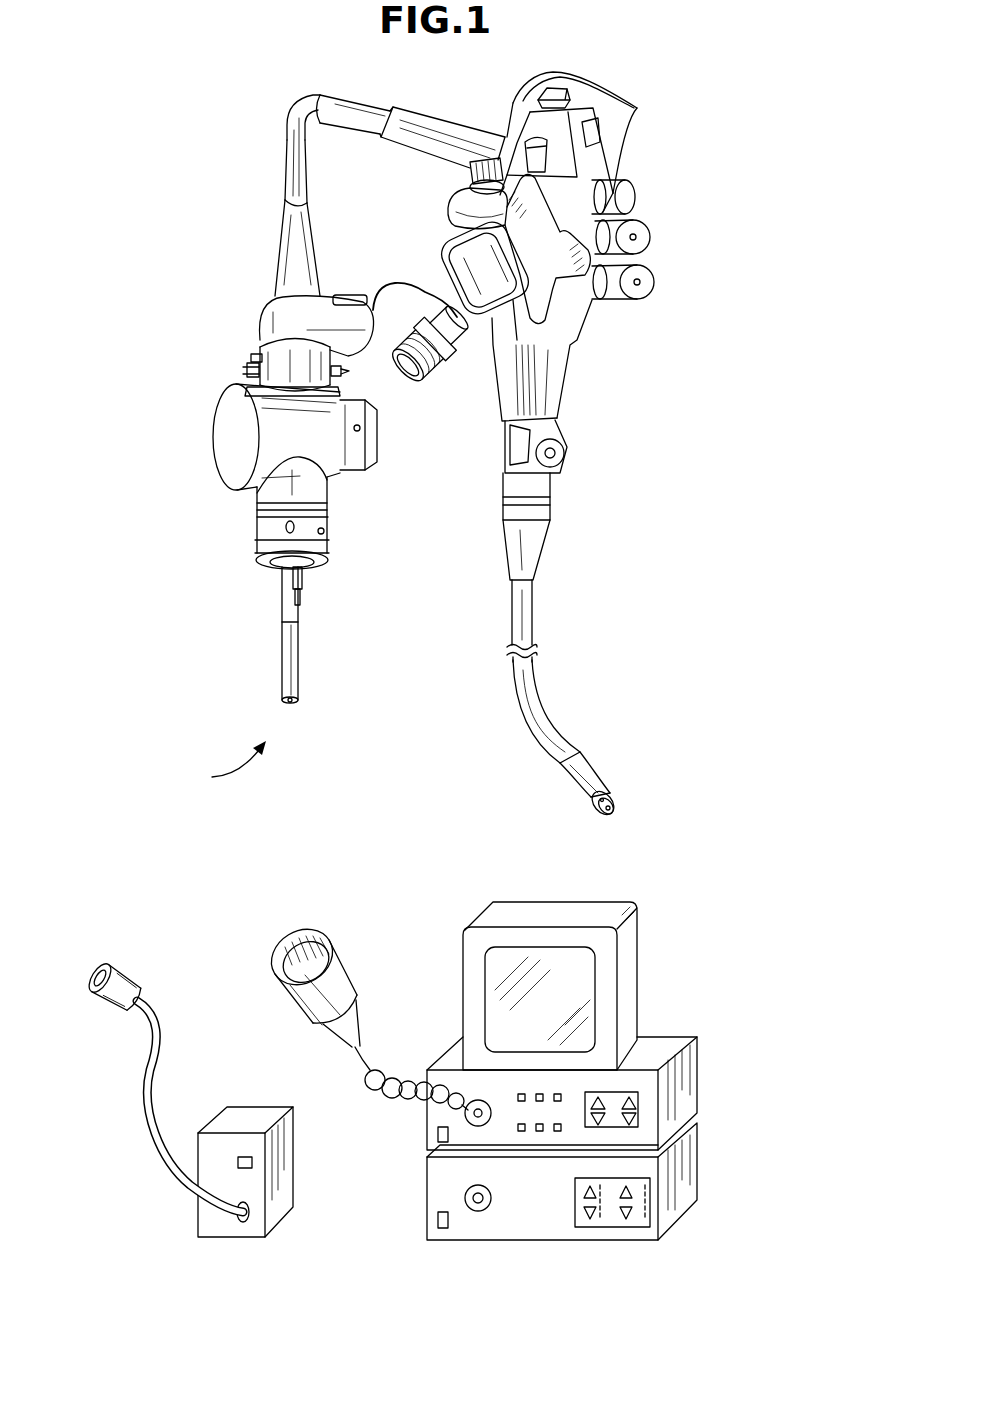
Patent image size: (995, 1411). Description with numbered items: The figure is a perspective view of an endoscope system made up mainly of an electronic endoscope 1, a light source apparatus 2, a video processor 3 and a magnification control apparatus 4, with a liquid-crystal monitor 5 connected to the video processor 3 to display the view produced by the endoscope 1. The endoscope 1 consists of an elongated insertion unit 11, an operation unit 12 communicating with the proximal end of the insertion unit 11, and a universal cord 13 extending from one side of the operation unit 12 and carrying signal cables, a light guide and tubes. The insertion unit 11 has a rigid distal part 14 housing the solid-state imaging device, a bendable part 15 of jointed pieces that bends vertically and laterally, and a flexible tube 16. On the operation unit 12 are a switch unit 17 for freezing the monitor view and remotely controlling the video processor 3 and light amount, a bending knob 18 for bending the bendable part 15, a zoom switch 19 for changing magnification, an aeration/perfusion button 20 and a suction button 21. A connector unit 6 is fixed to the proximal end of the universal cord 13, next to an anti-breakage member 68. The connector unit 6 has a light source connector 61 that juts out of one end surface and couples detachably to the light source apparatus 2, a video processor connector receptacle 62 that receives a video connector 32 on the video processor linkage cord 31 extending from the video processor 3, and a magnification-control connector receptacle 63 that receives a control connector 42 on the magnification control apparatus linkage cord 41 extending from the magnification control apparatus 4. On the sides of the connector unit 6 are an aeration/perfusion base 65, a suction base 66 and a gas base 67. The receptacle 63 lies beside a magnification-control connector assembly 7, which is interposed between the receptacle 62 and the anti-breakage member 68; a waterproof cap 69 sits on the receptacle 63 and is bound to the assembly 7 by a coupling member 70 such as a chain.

The electronic endoscope 1 is at (403, 592).
The light source apparatus 2 is at (660, 1200).
The video processor 3 is at (659, 1100).
The magnification control apparatus 4 is at (246, 1112).
The liquid-crystal monitor 5 is at (529, 925).
The connector unit 6 is at (223, 461).
The magnification-control connector assembly 7 is at (266, 320).
The insertion unit 11 is at (527, 617).
The operation unit 12 is at (570, 353).
The universal cord 13 is at (288, 136).
The rigid distal part 14 is at (606, 802).
The bendable part 15 is at (578, 776).
The flexible tube 16 is at (533, 688).
The switch unit 17 is at (637, 107).
The bending knob 18 is at (442, 242).
The zoom switch 19 is at (482, 162).
The aeration/perfusion button 20 is at (640, 286).
The suction button 21 is at (640, 236).
The video processor linkage cord 31 is at (367, 1100).
The video connector 32 is at (338, 958).
The magnification control apparatus linkage cord 41 is at (157, 1142).
The control connector 42 is at (119, 983).
The light source connector 61 is at (284, 650).
The video processor connector receptacle 62 is at (372, 456).
The magnification-control connector receptacle 63 is at (350, 294).
The aeration/perfusion base 65 is at (247, 371).
The suction base 66 is at (348, 373).
The gas base 67 is at (254, 360).
The anti-breakage member 68 is at (279, 243).
The waterproof cap 69 is at (446, 380).
The coupling member 70 is at (400, 283).